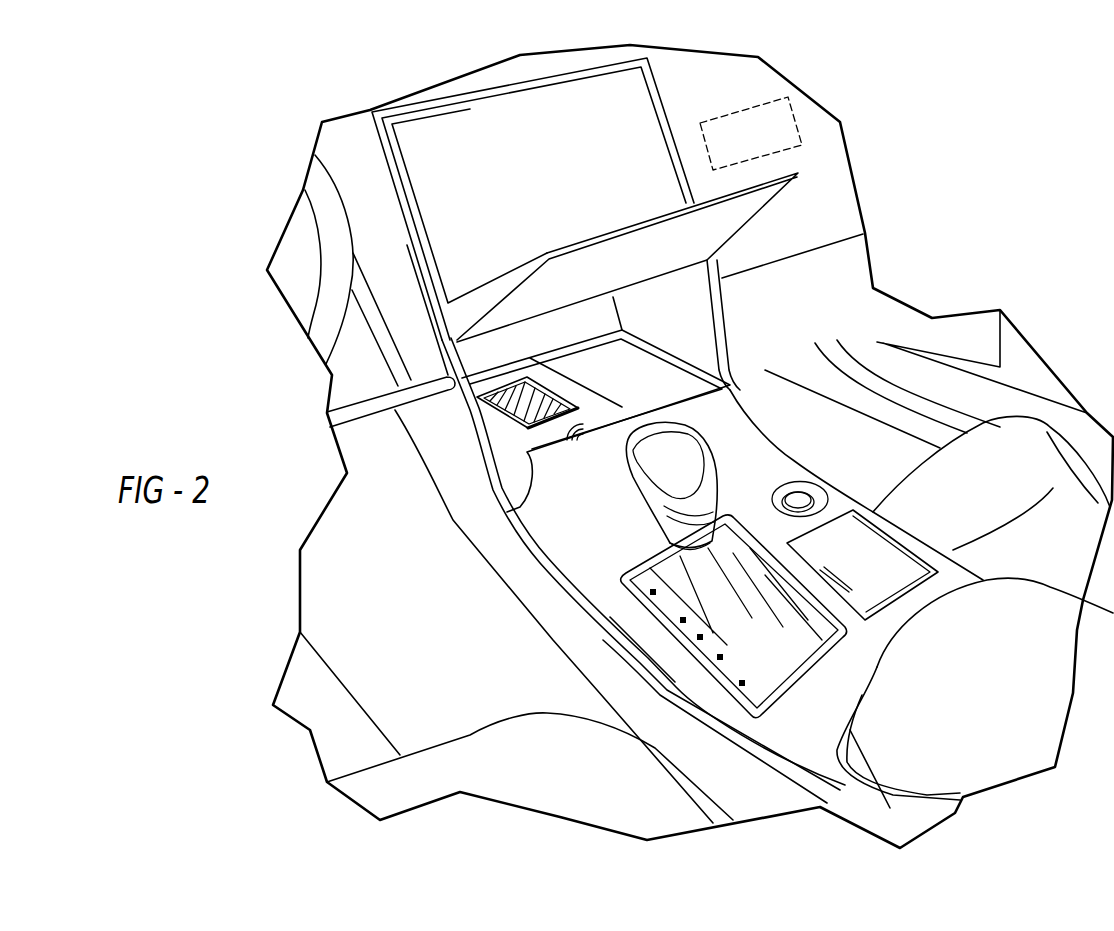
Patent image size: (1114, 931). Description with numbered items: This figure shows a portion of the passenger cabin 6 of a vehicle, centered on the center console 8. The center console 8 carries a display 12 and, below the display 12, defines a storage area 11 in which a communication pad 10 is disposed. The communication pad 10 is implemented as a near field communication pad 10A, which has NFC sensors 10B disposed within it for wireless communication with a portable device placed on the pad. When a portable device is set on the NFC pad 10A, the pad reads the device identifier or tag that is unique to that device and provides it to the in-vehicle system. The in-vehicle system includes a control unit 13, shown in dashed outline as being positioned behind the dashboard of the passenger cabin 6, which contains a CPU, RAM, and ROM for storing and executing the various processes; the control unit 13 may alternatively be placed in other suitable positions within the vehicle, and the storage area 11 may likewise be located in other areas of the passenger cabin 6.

The passenger cabin 6 is at (342, 583).
The center console 8 is at (548, 597).
The communication pad 10 is at (493, 427).
The near field communication (NFC) pad 10A is at (527, 446).
The NFC sensors 10B is at (572, 425).
The storage area 11 is at (697, 320).
The display 12 is at (452, 143).
The control unit 13 is at (800, 128).